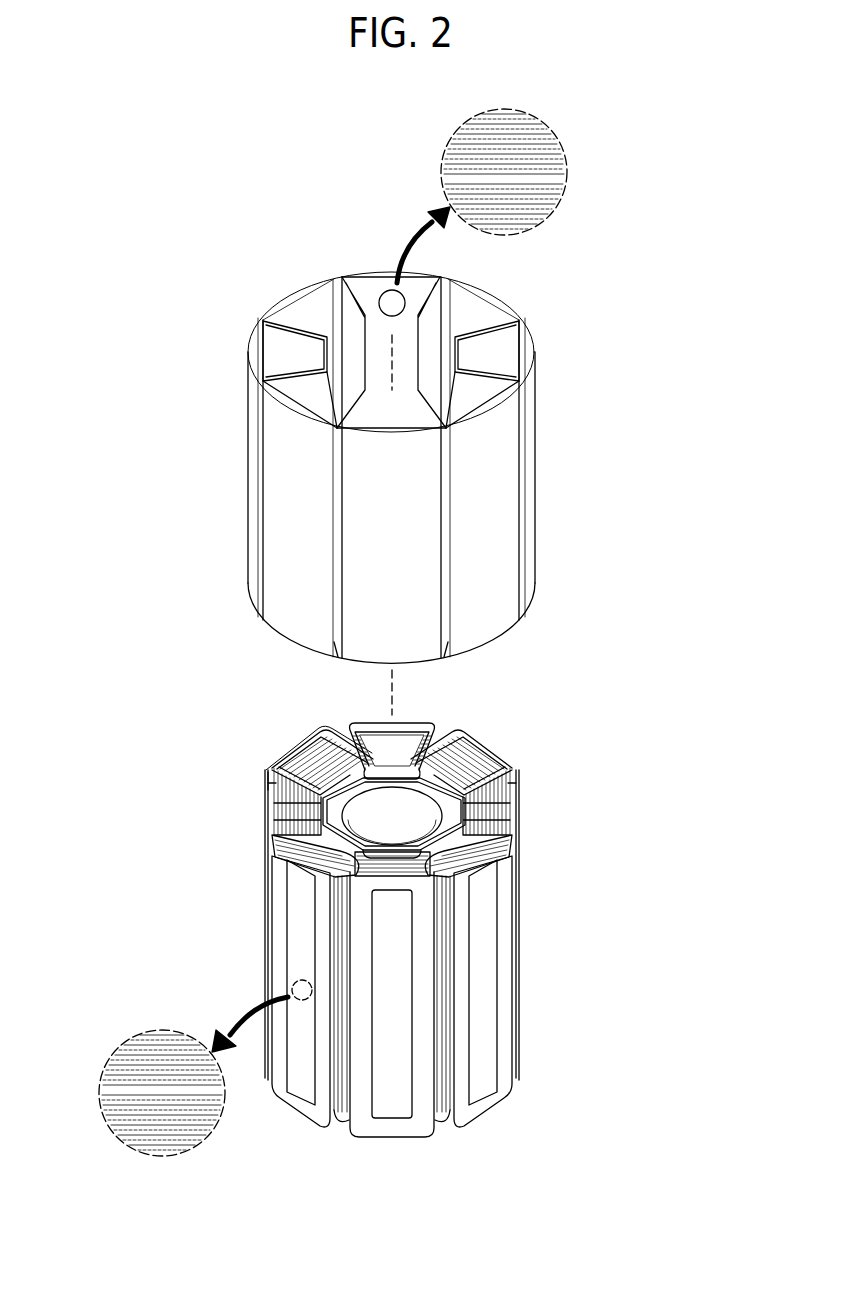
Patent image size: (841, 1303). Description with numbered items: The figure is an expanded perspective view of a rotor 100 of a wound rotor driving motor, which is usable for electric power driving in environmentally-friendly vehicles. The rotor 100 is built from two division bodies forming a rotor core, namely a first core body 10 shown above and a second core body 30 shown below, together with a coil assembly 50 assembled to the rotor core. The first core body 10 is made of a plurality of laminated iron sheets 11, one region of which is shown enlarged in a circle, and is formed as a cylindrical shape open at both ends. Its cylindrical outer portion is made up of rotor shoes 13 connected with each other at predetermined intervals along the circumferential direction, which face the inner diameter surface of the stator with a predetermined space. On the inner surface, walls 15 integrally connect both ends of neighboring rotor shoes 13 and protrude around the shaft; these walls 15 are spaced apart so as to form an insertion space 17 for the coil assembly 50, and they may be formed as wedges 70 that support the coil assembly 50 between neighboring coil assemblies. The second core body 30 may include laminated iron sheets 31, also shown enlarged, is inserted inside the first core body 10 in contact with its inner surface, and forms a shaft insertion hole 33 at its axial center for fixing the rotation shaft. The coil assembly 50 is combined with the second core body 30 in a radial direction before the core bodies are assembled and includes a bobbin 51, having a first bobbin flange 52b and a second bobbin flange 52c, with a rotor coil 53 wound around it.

The rotor 100 is at (373, 619).
The first core body 10 is at (449, 386).
The laminated iron sheets 11 is at (520, 196).
The rotor shoes 13 is at (441, 467).
The walls 15 is at (286, 327).
The insertion space 17 is at (537, 374).
The wedges 70 is at (457, 348).
The second core body 30 is at (347, 952).
The laminated iron sheets 31 is at (197, 1062).
The shaft insertion hole 33 is at (474, 816).
The coil assembly 50 is at (358, 913).
The bobbin 51 is at (252, 744).
The first bobbin flange 52b is at (221, 769).
The second bobbin flange 52c is at (270, 734).
The rotor coil 53 is at (414, 777).